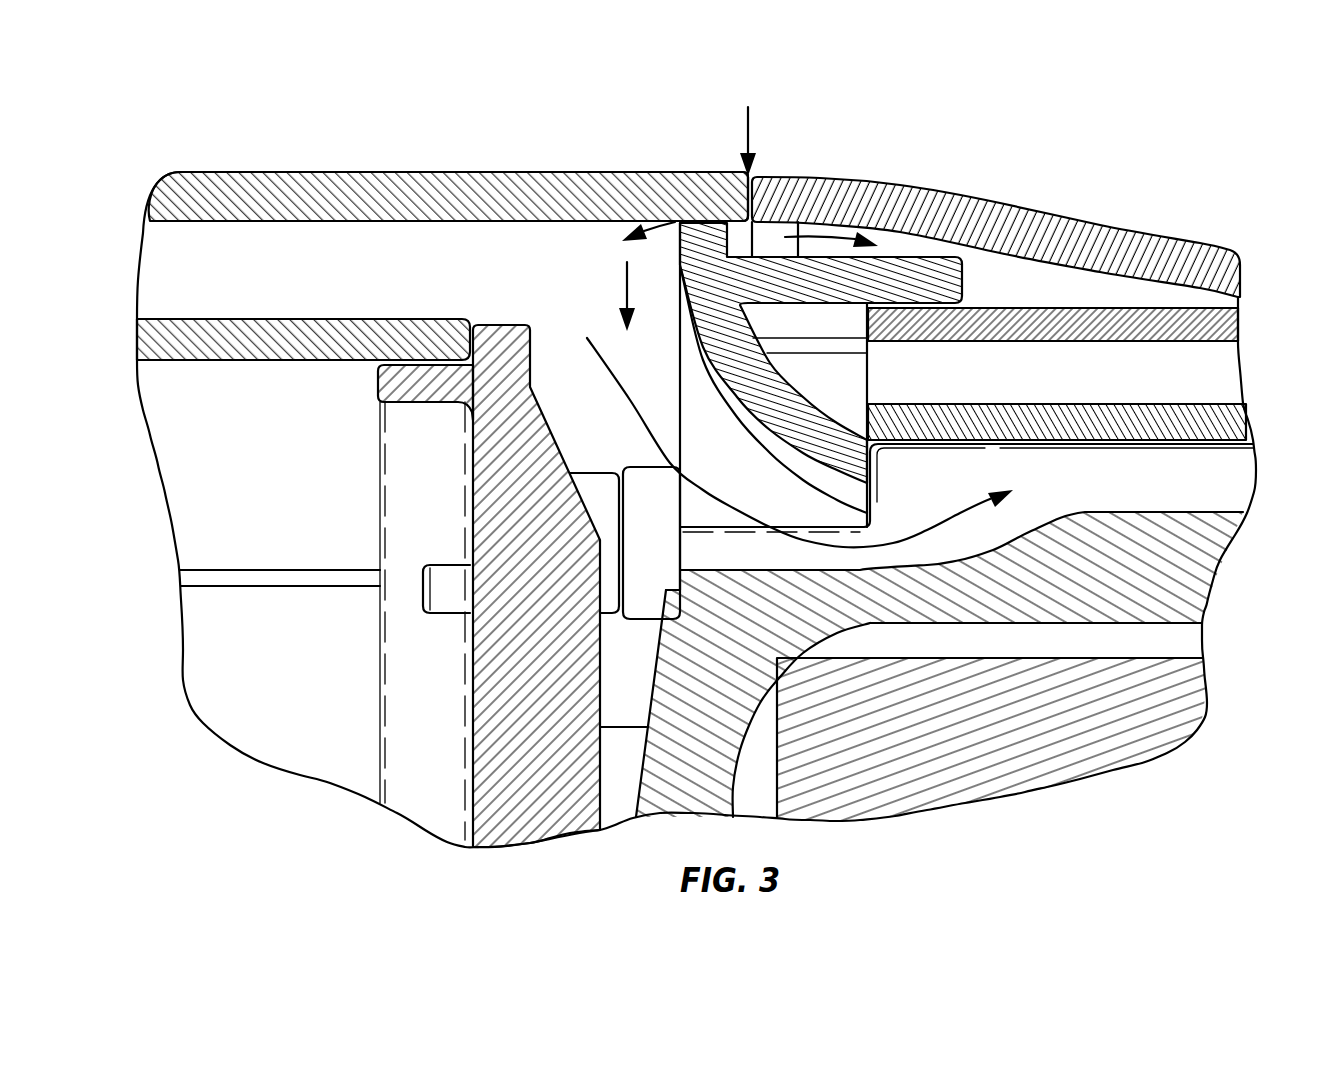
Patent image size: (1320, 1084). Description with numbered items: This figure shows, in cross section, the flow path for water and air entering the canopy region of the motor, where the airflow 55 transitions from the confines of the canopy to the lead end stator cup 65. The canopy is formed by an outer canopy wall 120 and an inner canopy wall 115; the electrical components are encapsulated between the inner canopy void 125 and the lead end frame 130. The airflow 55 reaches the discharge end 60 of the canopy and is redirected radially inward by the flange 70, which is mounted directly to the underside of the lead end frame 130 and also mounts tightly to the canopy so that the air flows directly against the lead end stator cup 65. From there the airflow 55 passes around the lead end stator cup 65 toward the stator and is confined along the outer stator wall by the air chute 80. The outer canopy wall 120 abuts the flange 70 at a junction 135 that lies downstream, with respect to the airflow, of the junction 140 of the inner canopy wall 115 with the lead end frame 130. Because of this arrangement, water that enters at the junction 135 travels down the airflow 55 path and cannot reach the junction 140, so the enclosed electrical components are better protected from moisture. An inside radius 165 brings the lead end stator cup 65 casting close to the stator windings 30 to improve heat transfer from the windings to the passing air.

The stator windings 30 is at (966, 747).
The airflow 55 is at (955, 520).
The discharge end 60 is at (505, 255).
The lead end stator cup 65 is at (1180, 567).
The flange 70 is at (912, 267).
The air chute 80 is at (1210, 413).
The inner canopy wall 115 is at (343, 330).
The outer canopy wall 120 is at (370, 187).
The inner canopy void 125 is at (338, 487).
The lead end frame 130 is at (537, 447).
The junction 135 is at (703, 178).
The junction 140 is at (472, 327).
The inside radius 165 is at (843, 620).